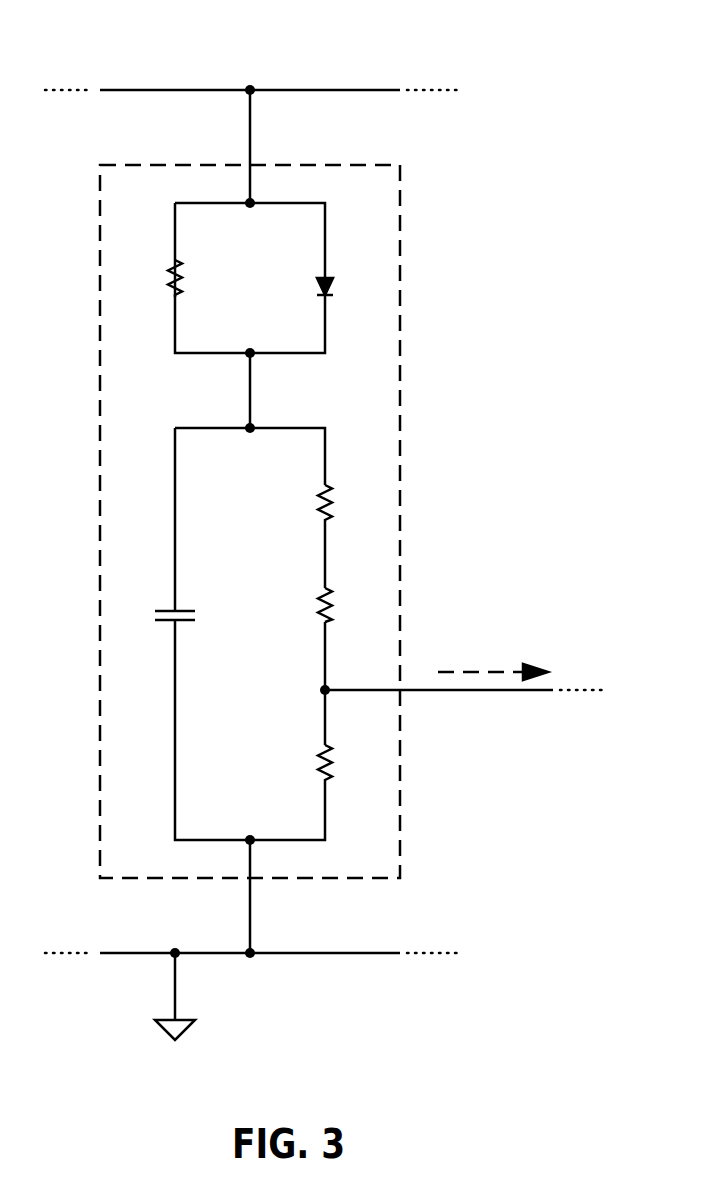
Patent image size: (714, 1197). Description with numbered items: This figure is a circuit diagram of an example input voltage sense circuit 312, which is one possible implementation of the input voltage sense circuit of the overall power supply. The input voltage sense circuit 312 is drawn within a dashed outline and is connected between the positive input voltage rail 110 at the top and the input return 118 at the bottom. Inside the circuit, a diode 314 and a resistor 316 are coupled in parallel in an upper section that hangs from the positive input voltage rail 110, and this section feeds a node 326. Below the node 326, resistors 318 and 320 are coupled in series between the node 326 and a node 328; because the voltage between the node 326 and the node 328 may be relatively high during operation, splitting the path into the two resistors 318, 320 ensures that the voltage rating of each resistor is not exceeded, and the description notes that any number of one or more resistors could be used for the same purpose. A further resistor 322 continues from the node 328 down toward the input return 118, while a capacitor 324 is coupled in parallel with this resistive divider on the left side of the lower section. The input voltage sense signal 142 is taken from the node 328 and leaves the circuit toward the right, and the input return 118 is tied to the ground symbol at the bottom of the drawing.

The positive input voltage rail 110 is at (190, 80).
The input return 118 is at (190, 998).
The input voltage sense circuit 312 is at (408, 217).
The diode 314 is at (312, 274).
The resistor 316 is at (190, 278).
The resistor 318 is at (311, 502).
The resistor 320 is at (313, 591).
The resistor 322 is at (312, 767).
The capacitor 324 is at (200, 609).
The node 326 is at (263, 419).
The node 328 is at (316, 699).
The input voltage sense signal 142 is at (488, 660).